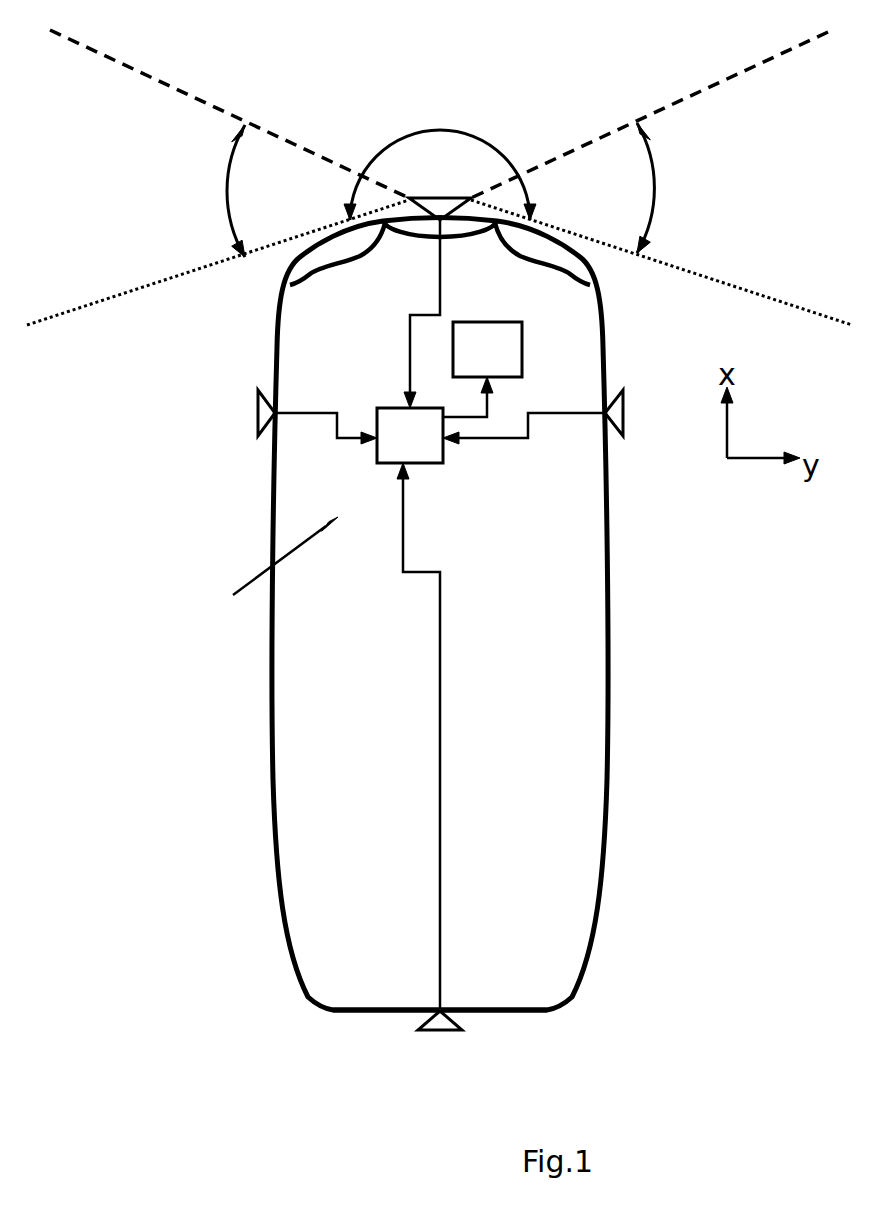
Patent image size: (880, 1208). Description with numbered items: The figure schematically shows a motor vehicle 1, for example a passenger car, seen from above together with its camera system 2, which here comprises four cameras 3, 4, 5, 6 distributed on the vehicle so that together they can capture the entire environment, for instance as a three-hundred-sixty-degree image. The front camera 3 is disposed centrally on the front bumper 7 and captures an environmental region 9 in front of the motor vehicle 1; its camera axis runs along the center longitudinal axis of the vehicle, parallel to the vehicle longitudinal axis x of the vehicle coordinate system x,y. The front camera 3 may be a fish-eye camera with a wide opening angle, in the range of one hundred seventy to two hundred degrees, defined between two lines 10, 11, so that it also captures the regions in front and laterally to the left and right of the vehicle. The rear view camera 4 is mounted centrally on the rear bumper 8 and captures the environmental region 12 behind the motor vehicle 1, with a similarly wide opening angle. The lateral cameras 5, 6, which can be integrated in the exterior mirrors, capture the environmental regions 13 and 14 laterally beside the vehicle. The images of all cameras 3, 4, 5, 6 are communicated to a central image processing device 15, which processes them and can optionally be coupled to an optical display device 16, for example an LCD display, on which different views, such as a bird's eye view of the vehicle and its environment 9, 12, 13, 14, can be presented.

The motor vehicle 1 is at (603, 638).
The camera system 2 is at (276, 570).
The front camera 3 is at (465, 200).
The rear view camera 4 is at (442, 1033).
The lateral camera 5 is at (258, 413).
The lateral camera 6 is at (623, 413).
The front bumper 7 is at (388, 217).
The rear bumper 8 is at (370, 1014).
The environmental region in front 9 is at (449, 71).
The line 10 is at (163, 282).
The line 11 is at (713, 282).
The environmental region behind 12 is at (456, 1154).
The lateral environmental region 13 is at (176, 517).
The lateral environmental region 14 is at (703, 519).
The image processing device 15 is at (435, 465).
The optical display device 16 is at (522, 347).